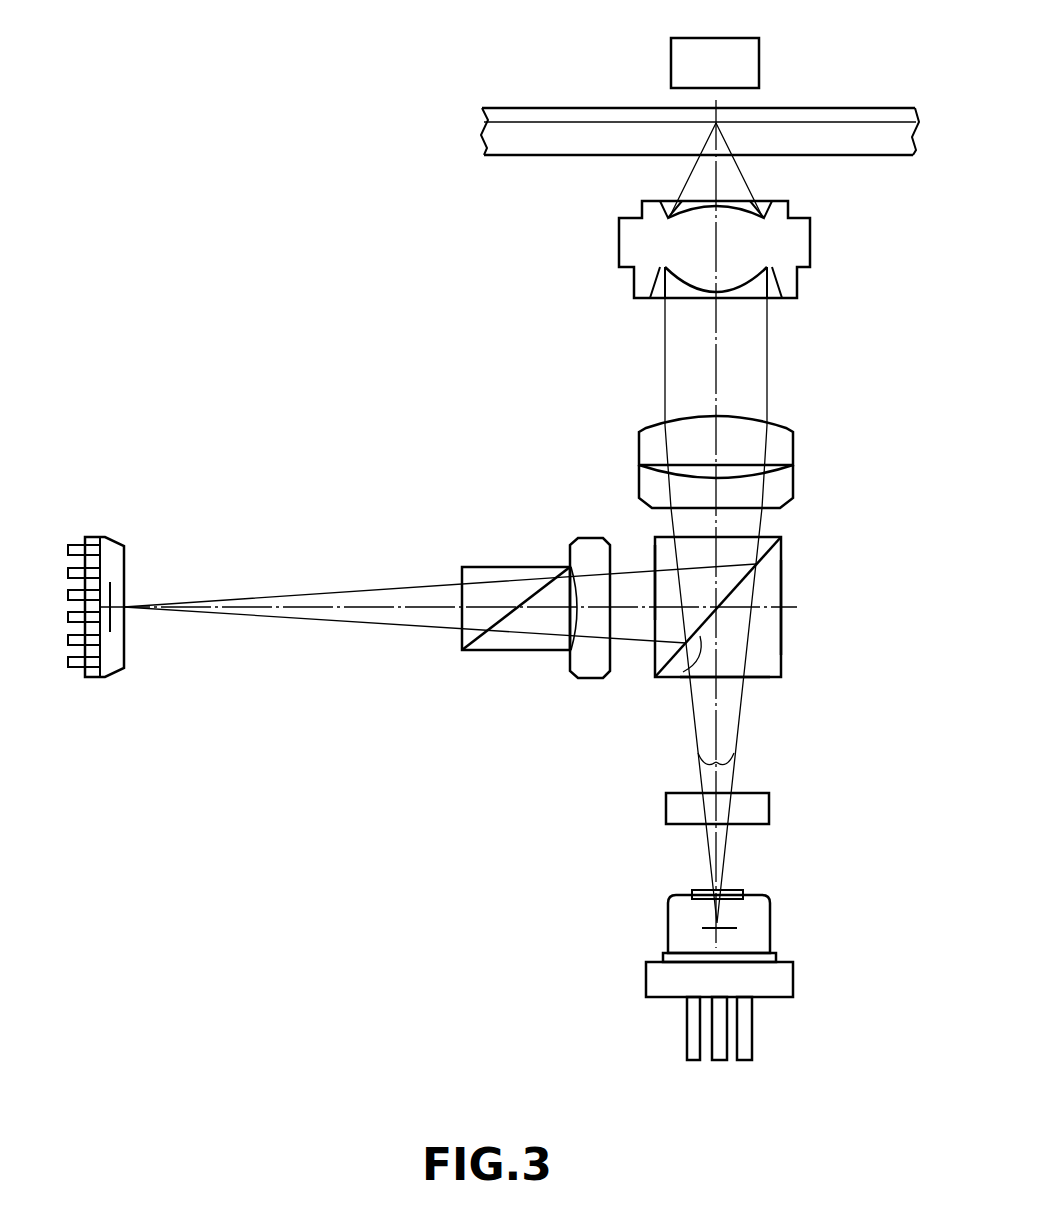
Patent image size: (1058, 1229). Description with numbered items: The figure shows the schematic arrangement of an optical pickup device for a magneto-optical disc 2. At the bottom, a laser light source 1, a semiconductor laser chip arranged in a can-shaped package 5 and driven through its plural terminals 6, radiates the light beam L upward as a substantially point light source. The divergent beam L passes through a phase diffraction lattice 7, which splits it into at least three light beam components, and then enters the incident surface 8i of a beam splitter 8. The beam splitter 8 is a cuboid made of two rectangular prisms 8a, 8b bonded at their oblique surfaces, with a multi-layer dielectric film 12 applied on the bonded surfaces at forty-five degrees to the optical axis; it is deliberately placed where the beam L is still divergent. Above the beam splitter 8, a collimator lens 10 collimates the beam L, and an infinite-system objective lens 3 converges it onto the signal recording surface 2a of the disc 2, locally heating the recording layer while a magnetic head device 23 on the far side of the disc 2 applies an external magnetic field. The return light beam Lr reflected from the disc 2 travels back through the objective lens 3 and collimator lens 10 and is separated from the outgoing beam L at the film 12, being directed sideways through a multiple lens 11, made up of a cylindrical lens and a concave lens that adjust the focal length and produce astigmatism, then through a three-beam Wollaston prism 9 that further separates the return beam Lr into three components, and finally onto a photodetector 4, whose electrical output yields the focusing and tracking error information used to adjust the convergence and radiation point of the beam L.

The laser light source 1 is at (772, 930).
The magneto-optical disc 2 is at (830, 103).
The signal recording surface 2a is at (868, 119).
The infinite-system objective lens 3 is at (810, 256).
The photodetector 4 is at (122, 543).
The can-shaped package 5 is at (680, 932).
The lead pins 6 is at (762, 1063).
The phase diffraction lattice 7 is at (769, 805).
The beam splitter 8 is at (770, 577).
The rectangular prism 8a is at (781, 642).
The rectangular prism 8b is at (662, 553).
The incident surface 8i is at (763, 680).
The three-beam Wollaston prism 9 is at (508, 650).
The collimator lens 10 is at (778, 433).
The multiple lens 11 is at (578, 550).
The multi-layer dielectric film 12 is at (667, 680).
The magnetic head device 23 is at (752, 37).
The light beam L is at (722, 857).
The return light beam Lr is at (338, 622).